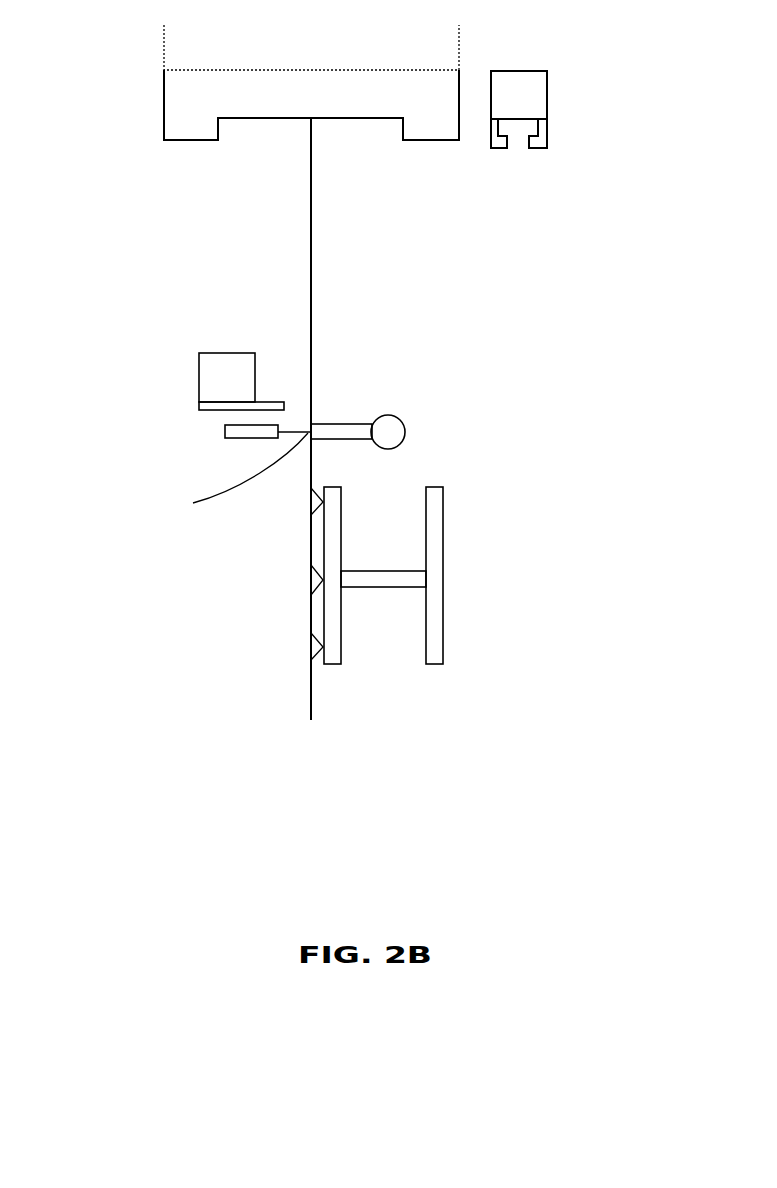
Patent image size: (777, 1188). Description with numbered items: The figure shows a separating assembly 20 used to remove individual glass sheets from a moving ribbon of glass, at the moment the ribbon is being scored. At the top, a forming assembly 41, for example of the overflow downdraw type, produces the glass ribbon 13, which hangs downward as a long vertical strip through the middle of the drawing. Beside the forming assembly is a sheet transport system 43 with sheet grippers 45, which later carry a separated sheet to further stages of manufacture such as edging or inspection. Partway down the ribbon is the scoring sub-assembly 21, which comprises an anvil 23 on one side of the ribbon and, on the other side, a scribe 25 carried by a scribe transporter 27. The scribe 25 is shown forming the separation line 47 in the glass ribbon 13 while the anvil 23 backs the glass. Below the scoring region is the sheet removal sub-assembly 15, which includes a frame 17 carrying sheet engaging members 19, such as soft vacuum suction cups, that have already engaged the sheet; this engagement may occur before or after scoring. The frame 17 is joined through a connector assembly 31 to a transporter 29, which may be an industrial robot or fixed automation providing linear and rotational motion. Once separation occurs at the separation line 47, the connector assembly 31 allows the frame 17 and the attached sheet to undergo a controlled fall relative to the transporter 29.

The glass ribbon 13 is at (307, 700).
The sheet removal sub-assembly 15 is at (406, 692).
The frame 17 is at (334, 536).
The sheet engaging members 19 is at (298, 500).
The separating assembly 20 is at (190, 574).
The scoring sub-assembly 21 is at (183, 338).
The anvil 23 is at (350, 431).
The scribe 25 is at (232, 436).
The scribe transporter 27 is at (210, 378).
The transporter 29 is at (434, 607).
The connector assembly 31 is at (375, 578).
The forming assembly 41 is at (333, 70).
The sheet transport system 43 is at (498, 78).
The sheet grippers 45 is at (537, 140).
The separation line 47 is at (228, 479).